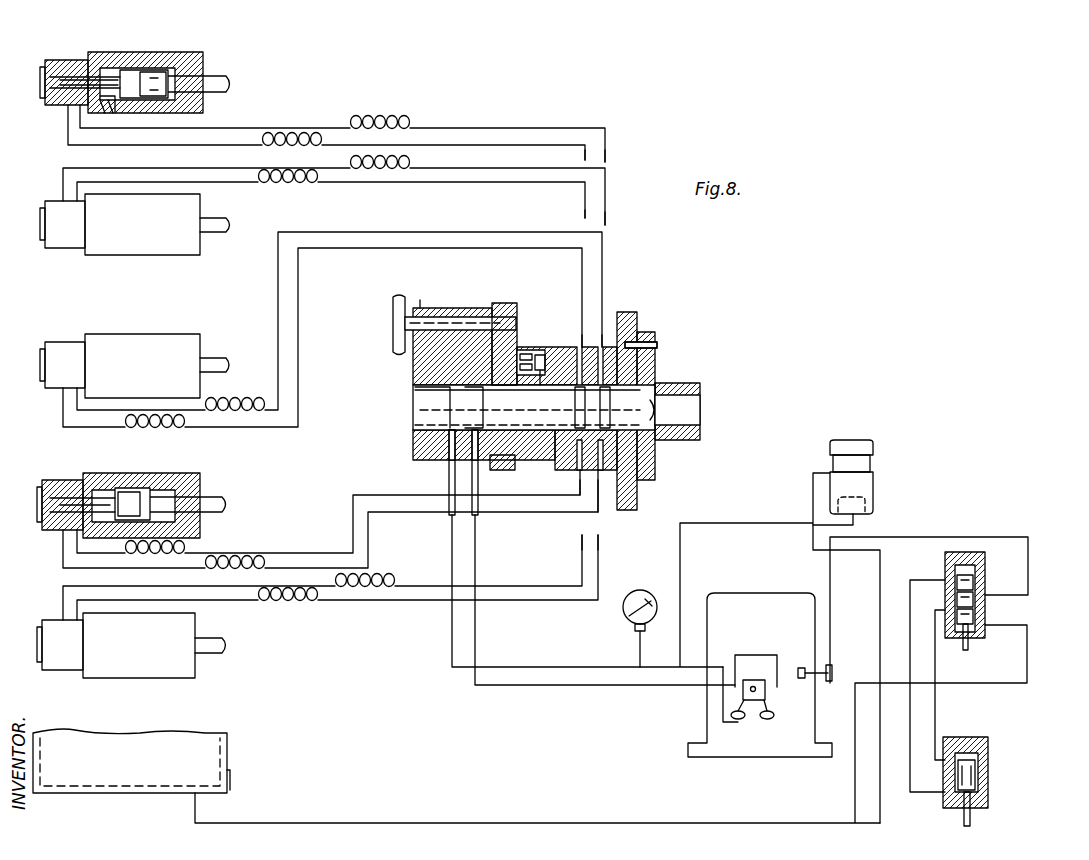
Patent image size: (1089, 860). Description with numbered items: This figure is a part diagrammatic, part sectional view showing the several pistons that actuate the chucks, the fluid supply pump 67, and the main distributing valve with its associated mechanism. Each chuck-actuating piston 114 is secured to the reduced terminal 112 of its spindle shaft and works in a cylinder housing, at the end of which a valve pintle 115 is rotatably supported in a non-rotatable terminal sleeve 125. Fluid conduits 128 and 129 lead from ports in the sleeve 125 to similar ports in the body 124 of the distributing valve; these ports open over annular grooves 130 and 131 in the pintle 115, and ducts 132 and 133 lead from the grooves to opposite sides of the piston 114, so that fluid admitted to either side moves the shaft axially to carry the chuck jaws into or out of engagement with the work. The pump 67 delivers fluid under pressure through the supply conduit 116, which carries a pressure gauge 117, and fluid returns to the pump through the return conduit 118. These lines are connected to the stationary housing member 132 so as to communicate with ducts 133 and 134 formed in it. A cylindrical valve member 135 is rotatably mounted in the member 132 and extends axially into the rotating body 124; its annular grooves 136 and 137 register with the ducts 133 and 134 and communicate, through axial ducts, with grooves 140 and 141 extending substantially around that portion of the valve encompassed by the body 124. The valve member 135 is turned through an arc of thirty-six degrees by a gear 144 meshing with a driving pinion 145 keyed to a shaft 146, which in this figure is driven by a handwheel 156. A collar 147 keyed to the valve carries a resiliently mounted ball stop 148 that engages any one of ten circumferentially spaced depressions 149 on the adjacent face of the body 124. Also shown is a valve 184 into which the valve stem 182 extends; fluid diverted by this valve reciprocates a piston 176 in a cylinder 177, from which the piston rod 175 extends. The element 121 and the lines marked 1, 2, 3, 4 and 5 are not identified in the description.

The pump 67 is at (745, 612).
The reduced terminal of shaft 112 is at (228, 84).
The piston 114 is at (158, 96).
The valve pintle 115 is at (40, 82).
The supply conduit 116 is at (572, 666).
The pressure gauge 117 is at (637, 596).
The return conduit 118 is at (578, 688).
The valve shaft 121 is at (678, 388).
The body of distributing valve 124 is at (205, 56).
The terminal sleeve 125 is at (56, 106).
The fluid conduit 128 is at (68, 145).
The fluid conduit 129 is at (80, 130).
The annular groove 130 is at (60, 76).
The annular groove 131 is at (80, 76).
The duct 132 is at (118, 100).
The duct 133 is at (104, 78).
The duct 134 is at (485, 462).
The cylindrical valve member 135 is at (425, 414).
The annular groove 136 is at (425, 392).
The annular groove 137 is at (538, 407).
The groove 140 is at (570, 407).
The groove 141 is at (648, 378).
The gear 144 is at (515, 470).
The driving pinion 145 is at (498, 303).
The shaft 146 is at (420, 308).
The collar 147 is at (527, 347).
The ball stop 148 is at (537, 352).
The depressions 149 is at (556, 355).
The handwheel 156 is at (393, 318).
The piston rod 175 is at (972, 822).
The piston 176 is at (987, 776).
The cylinder 177 is at (985, 742).
The valve stem 182 is at (967, 645).
The valve 184 is at (987, 570).
The port 1 is at (595, 156).
The port 2 is at (595, 216).
The port 3 is at (592, 331).
The port 4 is at (589, 496).
The port 5 is at (590, 546).